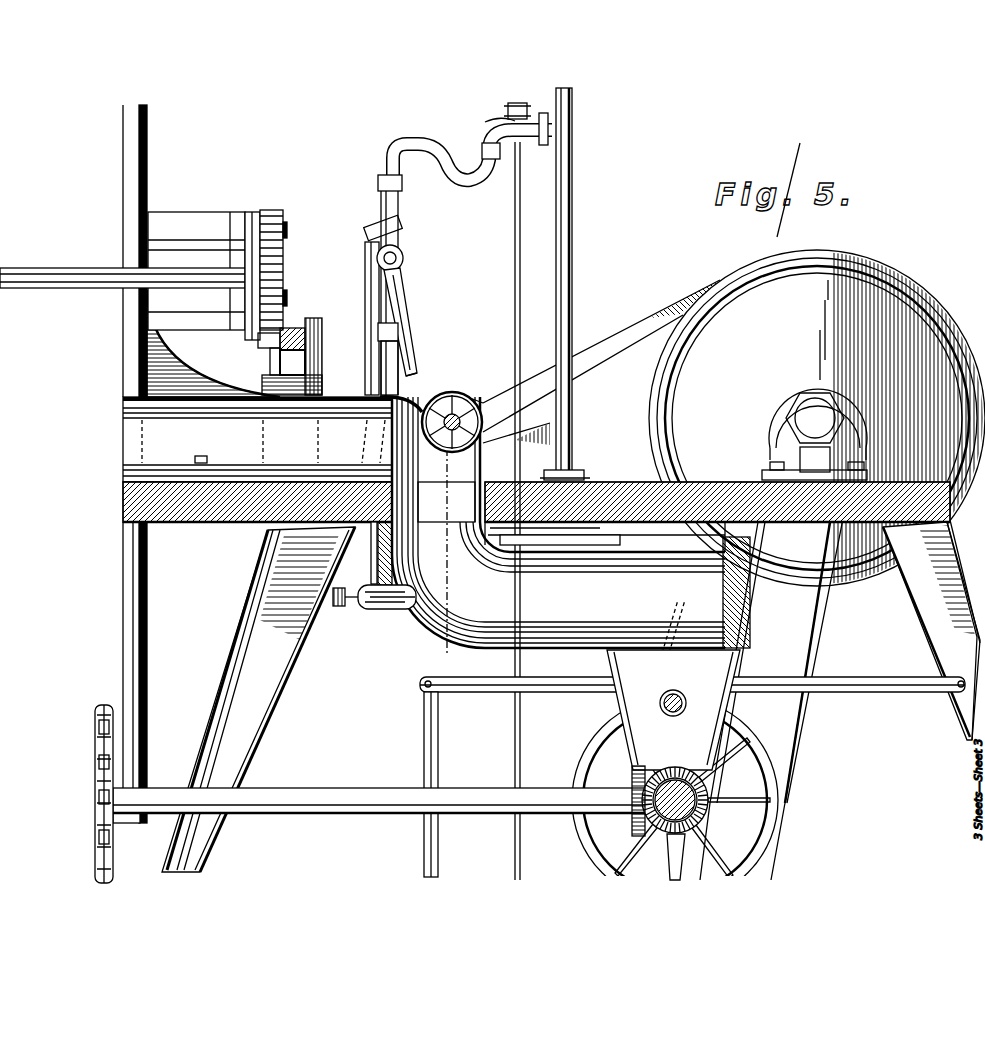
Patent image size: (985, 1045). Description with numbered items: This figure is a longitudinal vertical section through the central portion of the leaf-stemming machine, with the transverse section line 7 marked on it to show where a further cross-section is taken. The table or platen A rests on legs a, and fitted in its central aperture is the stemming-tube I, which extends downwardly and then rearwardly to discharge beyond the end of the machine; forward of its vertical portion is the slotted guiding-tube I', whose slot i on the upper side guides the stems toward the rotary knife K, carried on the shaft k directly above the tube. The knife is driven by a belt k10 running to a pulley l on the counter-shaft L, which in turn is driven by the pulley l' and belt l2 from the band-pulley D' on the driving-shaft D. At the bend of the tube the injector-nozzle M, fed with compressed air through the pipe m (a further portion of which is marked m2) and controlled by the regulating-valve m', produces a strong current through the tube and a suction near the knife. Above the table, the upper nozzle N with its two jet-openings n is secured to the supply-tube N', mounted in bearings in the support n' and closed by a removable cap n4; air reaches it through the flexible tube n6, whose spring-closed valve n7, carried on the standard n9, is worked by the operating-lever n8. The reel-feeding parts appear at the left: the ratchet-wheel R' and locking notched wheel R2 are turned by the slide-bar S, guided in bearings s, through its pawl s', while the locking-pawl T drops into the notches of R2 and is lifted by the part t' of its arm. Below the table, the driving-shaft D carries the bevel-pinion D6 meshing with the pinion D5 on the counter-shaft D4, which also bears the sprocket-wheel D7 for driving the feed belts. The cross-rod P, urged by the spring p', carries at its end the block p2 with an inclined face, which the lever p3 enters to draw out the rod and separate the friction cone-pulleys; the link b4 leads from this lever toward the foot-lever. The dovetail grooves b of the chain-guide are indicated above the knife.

The pulley l is at (817, 418).
The belt k10 is at (665, 330).
The pulley l' is at (798, 416).
The belt l2 is at (740, 430).
The counter-shaft L is at (815, 405).
The slotted guiding-tube I' is at (236, 440).
The table or platen A is at (622, 485).
The standard n9 is at (572, 197).
The flexible tube n6 is at (428, 148).
The operating-lever n8 is at (510, 112).
The valve n7 is at (552, 130).
The removable cap or plug n4 is at (372, 222).
The support n' is at (364, 293).
The supply-tube N' is at (421, 246).
The nozzle N is at (419, 322).
The jet-openings n is at (425, 357).
The pipe m is at (364, 359).
The slot i is at (205, 372).
The locking-pawl T is at (240, 225).
The locking notched wheel R2 is at (250, 240).
The ratchet-wheel R' is at (292, 270).
The part of arm t' is at (296, 318).
The bearings s is at (306, 356).
The pawl s' is at (256, 369).
The slide-bar S is at (262, 340).
The rotary knife K is at (462, 398).
The knife-shaft k is at (482, 410).
The stemming-tube I is at (564, 526).
The dovetail grooves b is at (666, 650).
The section line 7 is at (390, 135).
The pin m2 is at (370, 562).
The injector-nozzle M is at (375, 607).
The regulating-valve m' is at (336, 619).
The legs a is at (222, 668).
The block p2 is at (735, 688).
The lever p3 is at (584, 692).
The rod b4 is at (413, 784).
The band-pulley D' is at (695, 800).
The bevel-pinion D6 is at (705, 770).
The cross-rod P is at (673, 710).
The spring p' is at (662, 712).
The counter-shaft D4 is at (295, 788).
The driving-shaft D is at (734, 823).
The bevel-pinion D5 is at (636, 795).
The sprocket-wheel D7 is at (98, 740).